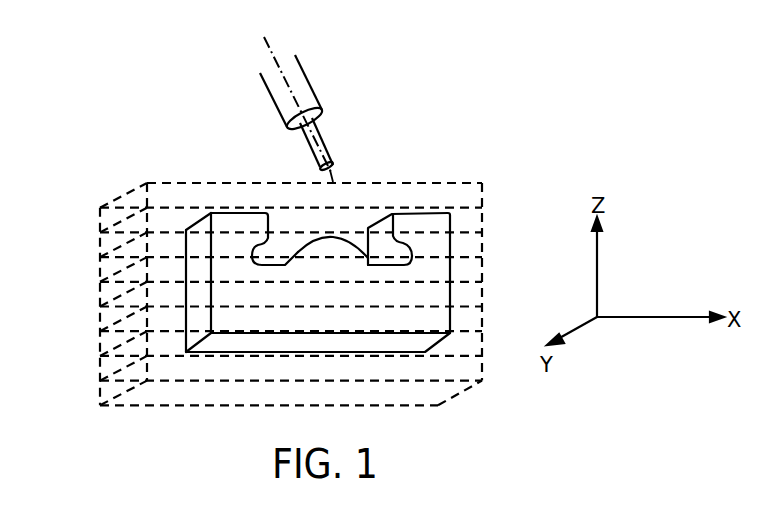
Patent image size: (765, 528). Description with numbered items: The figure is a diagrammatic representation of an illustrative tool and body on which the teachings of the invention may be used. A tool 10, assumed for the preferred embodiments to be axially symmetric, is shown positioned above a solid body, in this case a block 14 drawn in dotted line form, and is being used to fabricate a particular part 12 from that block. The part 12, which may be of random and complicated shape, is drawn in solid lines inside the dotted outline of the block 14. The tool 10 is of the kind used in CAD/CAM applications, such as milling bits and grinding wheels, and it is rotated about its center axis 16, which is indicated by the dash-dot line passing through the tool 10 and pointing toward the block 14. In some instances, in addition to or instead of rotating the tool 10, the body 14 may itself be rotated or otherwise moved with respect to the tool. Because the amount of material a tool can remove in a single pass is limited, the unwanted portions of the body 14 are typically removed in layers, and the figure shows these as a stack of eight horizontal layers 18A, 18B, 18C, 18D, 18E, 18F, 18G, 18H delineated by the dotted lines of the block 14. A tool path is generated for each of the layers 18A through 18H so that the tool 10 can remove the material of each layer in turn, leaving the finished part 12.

The tool 10 is at (305, 100).
The part 12 is at (442, 245).
The block 14 is at (483, 193).
The center axis 16 is at (265, 40).
The layer 18A is at (99, 222).
The layer 18B is at (99, 247).
The layer 18C is at (99, 272).
The layer 18D is at (99, 297).
The layer 18E is at (99, 322).
The layer 18F is at (99, 347).
The layer 18G is at (99, 372).
The layer 18H is at (99, 397).